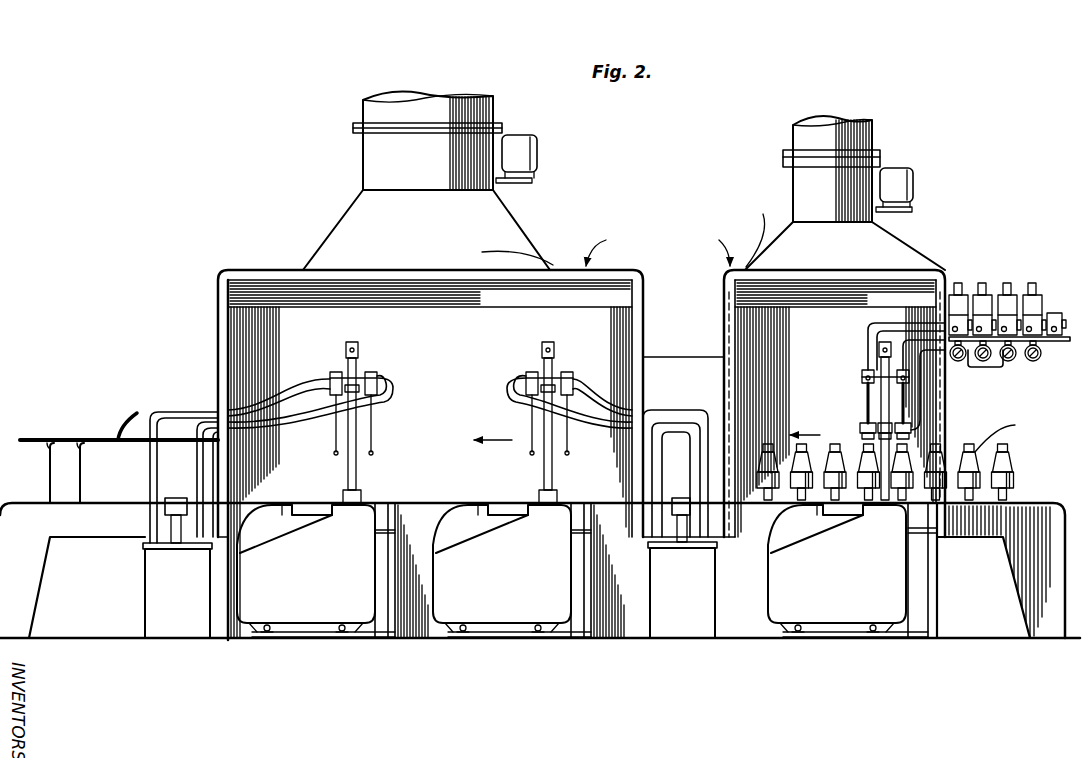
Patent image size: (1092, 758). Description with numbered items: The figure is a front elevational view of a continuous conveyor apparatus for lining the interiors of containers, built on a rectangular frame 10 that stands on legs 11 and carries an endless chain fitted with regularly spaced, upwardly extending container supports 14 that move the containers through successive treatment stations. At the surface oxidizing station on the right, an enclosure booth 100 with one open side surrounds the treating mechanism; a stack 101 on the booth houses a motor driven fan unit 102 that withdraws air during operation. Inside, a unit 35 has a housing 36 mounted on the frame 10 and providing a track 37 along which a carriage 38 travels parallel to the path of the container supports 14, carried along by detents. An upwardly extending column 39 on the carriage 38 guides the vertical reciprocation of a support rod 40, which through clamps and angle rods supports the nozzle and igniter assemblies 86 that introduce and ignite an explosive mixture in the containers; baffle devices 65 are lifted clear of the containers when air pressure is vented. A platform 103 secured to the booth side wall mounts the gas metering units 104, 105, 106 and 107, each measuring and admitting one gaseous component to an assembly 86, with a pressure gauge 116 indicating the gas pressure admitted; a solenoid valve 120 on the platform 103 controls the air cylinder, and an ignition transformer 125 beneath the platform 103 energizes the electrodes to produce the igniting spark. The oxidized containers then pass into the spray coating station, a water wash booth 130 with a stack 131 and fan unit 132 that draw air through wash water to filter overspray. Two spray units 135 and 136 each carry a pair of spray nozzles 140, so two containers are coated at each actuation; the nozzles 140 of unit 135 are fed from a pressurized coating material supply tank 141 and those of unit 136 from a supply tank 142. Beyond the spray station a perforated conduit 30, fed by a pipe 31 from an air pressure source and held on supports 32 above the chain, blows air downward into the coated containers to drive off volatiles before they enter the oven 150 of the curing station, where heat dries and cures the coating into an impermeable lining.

The rectangular frame 10 is at (1037, 501).
The legs 11 is at (42, 590).
The container supports 14 is at (1017, 477).
The perforated conduit 30 is at (35, 438).
The pipe 31 is at (116, 426).
The supports 32 is at (53, 485).
The unit 35 is at (814, 640).
The housing 36 is at (938, 565).
The track 37 is at (911, 638).
The carriage 38 is at (769, 603).
The column 39 is at (882, 498).
The support rod 40 is at (867, 432).
The baffle devices 65 is at (863, 432).
The nozzle and igniter assemblies 86 is at (899, 400).
The enclosure booth 100 is at (947, 412).
The stack 101 is at (802, 132).
The motor driven fan unit 102 is at (916, 178).
The platform 103 is at (1060, 342).
The gas metering unit 104 is at (965, 293).
The gas metering unit 105 is at (990, 292).
The gas metering unit 106 is at (1013, 292).
The gas metering unit 107 is at (1039, 292).
The pressure gauge 116 is at (1031, 362).
The solenoid valve 120 is at (1056, 312).
The ignition transformer 125 is at (982, 368).
The water wash booth 130 is at (643, 295).
The stack 131 is at (370, 104).
The fan unit 132 is at (539, 156).
The unit 135 is at (520, 521).
The unit 136 is at (357, 516).
The spray nozzles 140 is at (340, 438).
The pressurized coating material supply tank 141 is at (680, 628).
The pressurized coating material supply tank 142 is at (143, 611).
The oven 150 is at (671, 355).